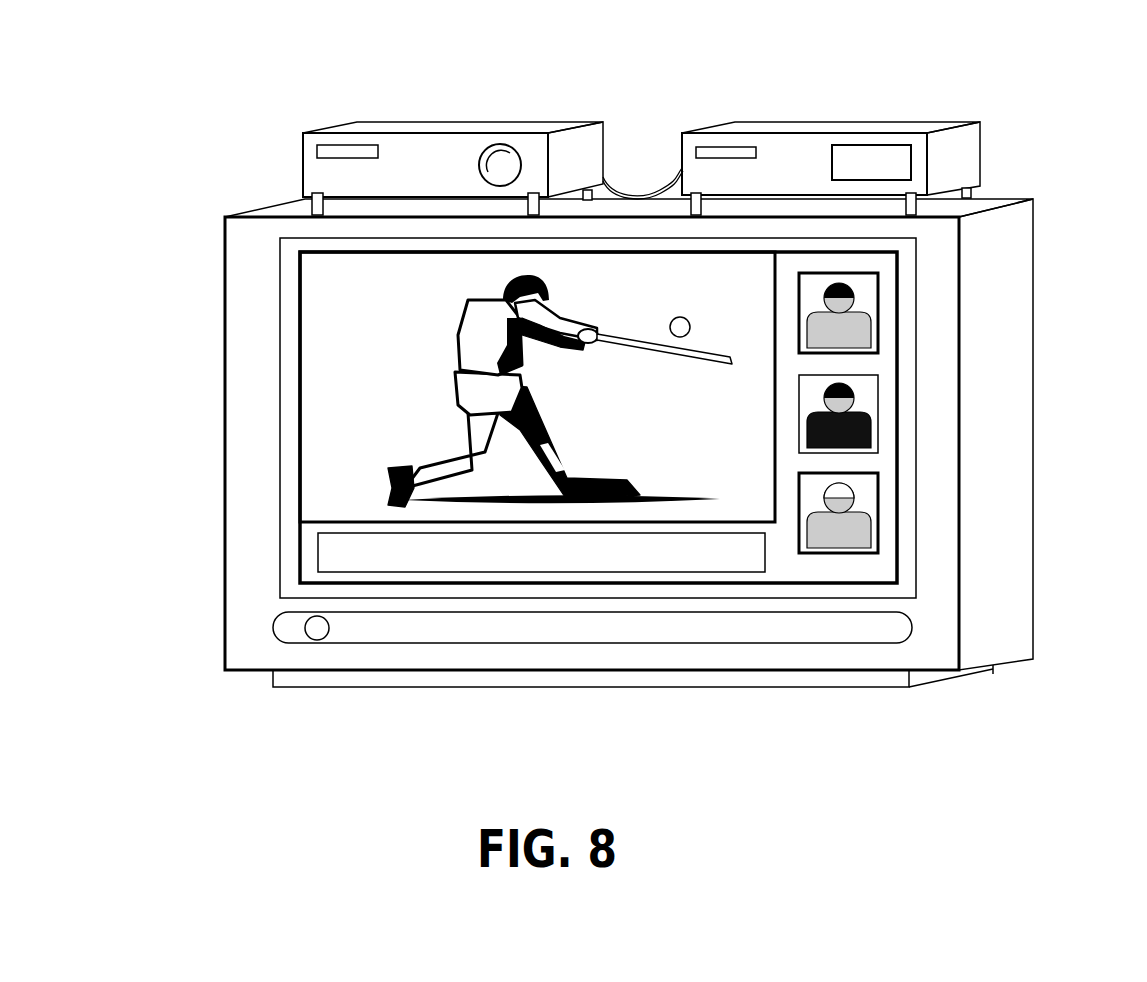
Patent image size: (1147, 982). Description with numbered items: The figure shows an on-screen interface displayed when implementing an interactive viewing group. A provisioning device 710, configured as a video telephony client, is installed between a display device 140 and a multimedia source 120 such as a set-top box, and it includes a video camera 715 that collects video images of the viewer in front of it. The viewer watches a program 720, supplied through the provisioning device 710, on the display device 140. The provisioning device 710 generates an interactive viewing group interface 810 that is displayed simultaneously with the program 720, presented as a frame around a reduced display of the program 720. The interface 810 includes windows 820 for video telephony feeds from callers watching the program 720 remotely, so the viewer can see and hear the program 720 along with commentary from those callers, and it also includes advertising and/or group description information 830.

The multimedia source 120 is at (722, 130).
The display device 140 is at (224, 417).
The provisioning device 710 is at (345, 130).
The video camera 715 is at (502, 145).
The program 720 is at (315, 321).
The interactive viewing group interface 810 is at (898, 268).
The windows 820 is at (872, 433).
The advertising and/or group description information 830 is at (315, 542).